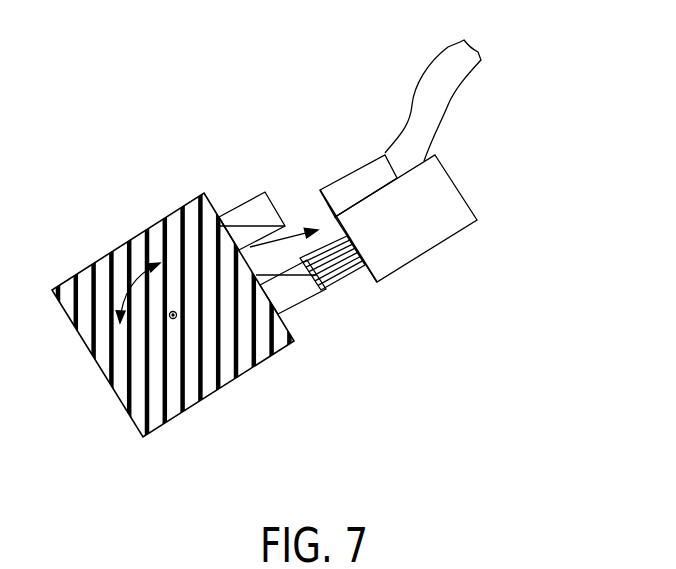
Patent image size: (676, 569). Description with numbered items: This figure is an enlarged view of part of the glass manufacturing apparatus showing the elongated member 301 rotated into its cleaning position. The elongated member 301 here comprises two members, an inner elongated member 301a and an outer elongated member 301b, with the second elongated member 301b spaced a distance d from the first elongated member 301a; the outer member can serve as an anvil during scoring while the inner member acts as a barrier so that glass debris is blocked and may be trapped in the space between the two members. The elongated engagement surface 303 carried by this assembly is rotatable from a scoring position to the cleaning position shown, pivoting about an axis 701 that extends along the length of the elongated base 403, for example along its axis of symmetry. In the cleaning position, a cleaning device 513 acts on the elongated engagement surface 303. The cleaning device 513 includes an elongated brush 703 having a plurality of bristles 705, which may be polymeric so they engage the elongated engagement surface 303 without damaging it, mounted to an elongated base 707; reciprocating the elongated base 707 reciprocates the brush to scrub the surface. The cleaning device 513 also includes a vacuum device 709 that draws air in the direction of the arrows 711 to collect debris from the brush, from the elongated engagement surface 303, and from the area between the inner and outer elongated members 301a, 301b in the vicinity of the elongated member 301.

The elongated member 301 is at (242, 242).
The inner elongated member 301a is at (238, 205).
The outer elongated member 301b is at (290, 313).
The elongated engagement surface 303 is at (357, 275).
The elongated base 403 is at (227, 388).
The cleaning device 513 is at (446, 265).
The axis 701 is at (170, 318).
The elongated brush 703 is at (358, 268).
The bristles 705 is at (334, 264).
The elongated base 707 is at (459, 190).
The vacuum device 709 is at (358, 168).
The arrows 711 is at (309, 198).
The distance d is at (256, 264).